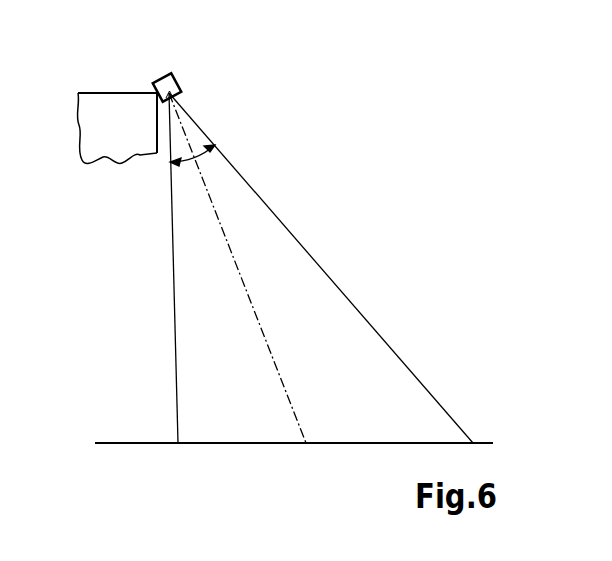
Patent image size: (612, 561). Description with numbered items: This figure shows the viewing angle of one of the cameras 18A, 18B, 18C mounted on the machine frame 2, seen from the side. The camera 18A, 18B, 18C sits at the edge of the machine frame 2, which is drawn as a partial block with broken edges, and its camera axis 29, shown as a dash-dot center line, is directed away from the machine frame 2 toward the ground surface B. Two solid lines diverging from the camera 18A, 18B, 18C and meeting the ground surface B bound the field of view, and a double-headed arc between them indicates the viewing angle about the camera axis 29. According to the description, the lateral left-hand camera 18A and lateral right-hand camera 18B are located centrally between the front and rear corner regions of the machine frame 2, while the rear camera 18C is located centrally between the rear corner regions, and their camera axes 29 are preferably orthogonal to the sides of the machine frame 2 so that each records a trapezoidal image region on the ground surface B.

The machine frame 2 is at (115, 103).
The lateral left-hand camera 18A is at (240, 82).
The lateral right-hand camera 18B is at (240, 82).
The rear camera 18C is at (180, 88).
The camera axis 29 is at (212, 205).
The ground surface B is at (135, 443).